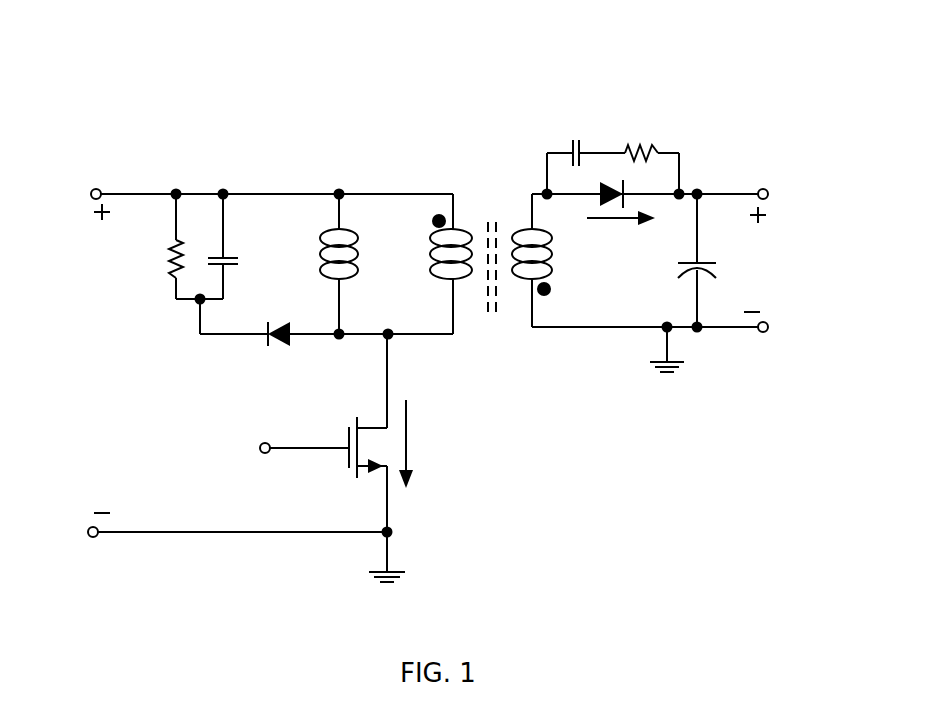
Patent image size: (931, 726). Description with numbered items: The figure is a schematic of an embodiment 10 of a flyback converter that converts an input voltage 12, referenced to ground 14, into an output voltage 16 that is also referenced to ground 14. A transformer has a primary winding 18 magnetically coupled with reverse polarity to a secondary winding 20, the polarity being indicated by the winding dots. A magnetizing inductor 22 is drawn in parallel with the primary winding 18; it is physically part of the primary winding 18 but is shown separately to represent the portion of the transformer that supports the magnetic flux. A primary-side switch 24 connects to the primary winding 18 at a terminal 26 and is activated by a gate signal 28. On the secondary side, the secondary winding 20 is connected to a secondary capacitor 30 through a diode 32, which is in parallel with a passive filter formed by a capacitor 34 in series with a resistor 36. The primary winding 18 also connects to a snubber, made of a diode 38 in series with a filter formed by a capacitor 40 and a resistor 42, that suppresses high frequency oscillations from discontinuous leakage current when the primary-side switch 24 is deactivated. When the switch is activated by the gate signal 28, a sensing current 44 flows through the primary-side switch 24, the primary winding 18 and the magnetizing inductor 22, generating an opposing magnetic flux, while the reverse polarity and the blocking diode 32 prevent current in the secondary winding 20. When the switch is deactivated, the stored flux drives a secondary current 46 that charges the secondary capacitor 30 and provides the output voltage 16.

The flyback converter embodiment 10 is at (560, 62).
The input voltage 12 is at (99, 189).
The ground 14 is at (93, 537).
The output voltage 16 is at (762, 189).
The primary winding 18 is at (430, 241).
The secondary winding 20 is at (540, 232).
The magnetizing inductor 22 is at (328, 238).
The primary-side switch 24 is at (353, 476).
The terminal 26 is at (418, 332).
The gate signal 28 is at (266, 443).
The secondary capacitor 30 is at (706, 262).
The diode 32 is at (600, 186).
The capacitor 34 is at (573, 141).
The resistor 36 is at (635, 143).
The diode 38 is at (294, 324).
The capacitor 40 is at (229, 266).
The resistor 42 is at (171, 272).
The sensing current 44 is at (412, 446).
The secondary current 46 is at (618, 224).